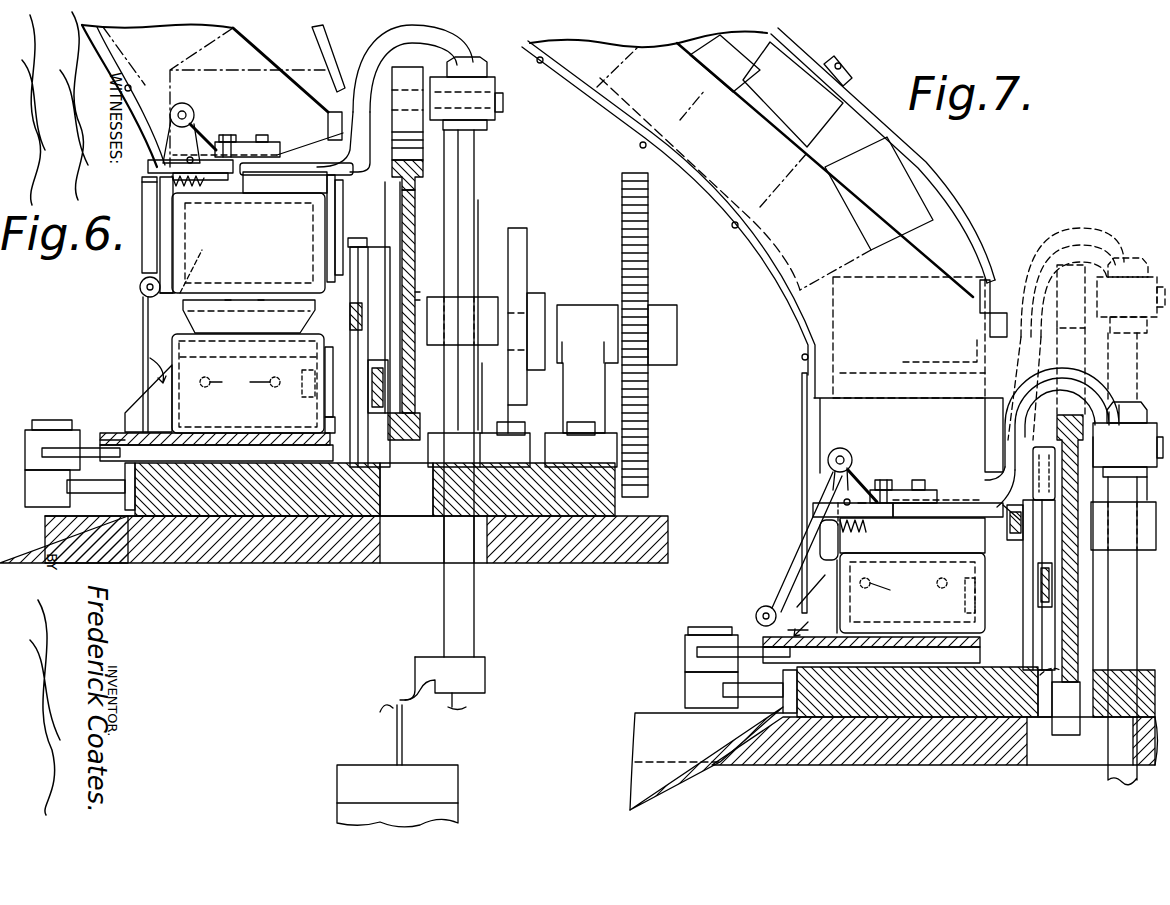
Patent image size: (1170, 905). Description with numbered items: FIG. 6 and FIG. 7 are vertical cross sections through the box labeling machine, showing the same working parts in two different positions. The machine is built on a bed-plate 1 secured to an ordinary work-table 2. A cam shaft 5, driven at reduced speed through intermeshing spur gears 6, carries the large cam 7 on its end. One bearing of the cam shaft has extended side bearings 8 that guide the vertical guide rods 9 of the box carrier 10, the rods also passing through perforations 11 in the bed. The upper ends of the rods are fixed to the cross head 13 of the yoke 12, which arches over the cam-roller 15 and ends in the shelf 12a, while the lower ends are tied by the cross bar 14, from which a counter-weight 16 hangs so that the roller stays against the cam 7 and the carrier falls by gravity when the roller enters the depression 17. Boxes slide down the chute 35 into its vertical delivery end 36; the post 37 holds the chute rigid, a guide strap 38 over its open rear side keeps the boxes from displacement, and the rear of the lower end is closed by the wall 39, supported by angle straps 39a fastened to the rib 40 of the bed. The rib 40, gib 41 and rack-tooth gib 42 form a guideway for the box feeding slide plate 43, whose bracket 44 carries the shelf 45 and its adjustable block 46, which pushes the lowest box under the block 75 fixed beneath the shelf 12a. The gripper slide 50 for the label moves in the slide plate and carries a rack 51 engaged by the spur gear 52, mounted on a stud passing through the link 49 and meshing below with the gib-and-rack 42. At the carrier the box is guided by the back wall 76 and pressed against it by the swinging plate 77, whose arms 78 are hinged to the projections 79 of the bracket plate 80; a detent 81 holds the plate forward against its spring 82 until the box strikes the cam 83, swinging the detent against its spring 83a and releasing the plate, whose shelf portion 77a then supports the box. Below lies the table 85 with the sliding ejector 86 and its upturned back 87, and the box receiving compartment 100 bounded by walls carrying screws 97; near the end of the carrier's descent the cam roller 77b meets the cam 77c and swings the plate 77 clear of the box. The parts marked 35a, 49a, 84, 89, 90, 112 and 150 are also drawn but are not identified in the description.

In FIG. 6, the bed-plate 1 is at (312, 512).
In FIG. 6, the work-table 2 is at (592, 560).
In FIG. 7, the work-table 2 is at (997, 755).
In FIG. 6, the cam shaft 5 is at (560, 305).
In FIG. 6, the spur gears 6 is at (645, 292).
In FIG. 6, the large cam 7 is at (418, 200).
In FIG. 7, the large cam 7 is at (1068, 738).
In FIG. 6, the extended side bearings 8 is at (480, 300).
In FIG. 7, the extended side bearings 8 is at (1150, 486).
In FIG. 6, the guide rods 9 is at (444, 608).
In FIG. 7, the guide rods 9 is at (1123, 614).
In FIG. 6, the box carrier 10 is at (344, 168).
In FIG. 7, the box carrier 10 is at (977, 497).
In FIG. 6, the perforations 11 is at (438, 520).
In FIG. 7, the perforations 11 is at (1105, 722).
In FIG. 6, the yoke portion 12 is at (382, 30).
In FIG. 7, the yoke portion 12 is at (1054, 232).
In FIG. 6, the shelf 12a is at (290, 150).
In FIG. 6, the cross head 13 is at (493, 90).
In FIG. 7, the cross head 13 is at (1128, 285).
In FIG. 6, the cross bar 14 is at (484, 678).
In FIG. 6, the cam-roller 15 is at (398, 120).
In FIG. 7, the cam-roller 15 is at (1062, 306).
In FIG. 6, the counter-weight 16 is at (458, 793).
In FIG. 6, the depression 17 is at (406, 489).
In FIG. 6, the chute 35 is at (300, 47).
In FIG. 7, the chute 35 is at (860, 124).
In FIG. 6, the plate 35a is at (64, 537).
In FIG. 7, the plate 35a is at (706, 758).
In FIG. 7, the delivery end 36 is at (823, 410).
In FIG. 6, the vertical post 37 is at (143, 350).
In FIG. 7, the vertical post 37 is at (802, 467).
In FIG. 6, the guide strap 38 is at (326, 70).
In FIG. 7, the guide strap 38 is at (967, 214).
In FIG. 6, the vertical wall 39 is at (331, 128).
In FIG. 7, the vertical wall 39 is at (990, 330).
In FIG. 7, the angle straps 39a is at (1003, 437).
In FIG. 6, the flange 40 is at (380, 288).
In FIG. 7, the flange 40 is at (1075, 640).
In FIG. 6, the gib 41 is at (356, 246).
In FIG. 7, the gib 41 is at (1039, 585).
In FIG. 6, the rack-tooth gib 42 is at (370, 482).
In FIG. 7, the rack-tooth gib 42 is at (975, 656).
In FIG. 6, the slide plate 43 is at (376, 374).
In FIG. 7, the slide plate 43 is at (1045, 548).
In FIG. 6, the bracket 44 is at (270, 340).
In FIG. 6, the box receiving shelf 45 is at (225, 300).
In FIG. 7, the box receiving shelf 45 is at (863, 502).
In FIG. 6, the block 46 is at (258, 298).
In FIG. 7, the block 46 is at (925, 497).
In FIG. 6, the link 49 is at (383, 407).
In FIG. 7, the link 49 is at (1040, 537).
In FIG. 6, the plate 49a is at (462, 321).
In FIG. 7, the plate 49a is at (1123, 526).
In FIG. 6, the gripper slide 50 is at (415, 295).
In FIG. 7, the gripper slide 50 is at (1002, 506).
In FIG. 6, the rack 51 is at (341, 310).
In FIG. 7, the rack 51 is at (1015, 522).
In FIG. 6, the spur gear 52 is at (328, 422).
In FIG. 6, the block 75 is at (285, 183).
In FIG. 7, the block 75 is at (912, 526).
In FIG. 6, the back wall 76 is at (326, 226).
In FIG. 7, the back wall 76 is at (975, 548).
In FIG. 6, the swinging plate 77 is at (160, 250).
In FIG. 7, the swinging plate 77 is at (812, 548).
In FIG. 6, the shelf portion 77a is at (199, 262).
In FIG. 7, the shelf portion 77a is at (797, 630).
In FIG. 6, the cam roller 77b is at (140, 286).
In FIG. 7, the cam roller 77b is at (757, 612).
In FIG. 6, the cam 77c is at (134, 404).
In FIG. 7, the cam 77c is at (823, 577).
In FIG. 6, the arms 78 is at (172, 118).
In FIG. 7, the arms 78 is at (818, 485).
In FIG. 6, the projections 79 is at (200, 135).
In FIG. 7, the projections 79 is at (858, 480).
In FIG. 6, the bracket plate 80 is at (262, 142).
In FIG. 7, the bracket plate 80 is at (903, 488).
In FIG. 6, the detent 81 is at (207, 172).
In FIG. 7, the detent 81 is at (815, 512).
In FIG. 6, the spring 82 is at (186, 190).
In FIG. 7, the spring 82 is at (858, 538).
In FIG. 6, the cam 83 is at (157, 198).
In FIG. 7, the cam 83 is at (820, 553).
In FIG. 6, the spring 83a is at (191, 156).
In FIG. 7, the spring 83a is at (851, 500).
In FIG. 6, the plate 84 is at (330, 400).
In FIG. 6, the table 85 is at (228, 433).
In FIG. 7, the table 85 is at (737, 633).
In FIG. 6, the ejector 86 is at (216, 458).
In FIG. 7, the ejector 86 is at (871, 659).
In FIG. 7, the back 87 is at (965, 598).
In FIG. 6, the bracket 89 is at (116, 432).
In FIG. 6, the fitting 90 is at (93, 452).
In FIG. 7, the fitting 90 is at (752, 660).
In FIG. 6, the screws 97 is at (240, 382).
In FIG. 7, the screws 97 is at (935, 588).
In FIG. 6, the box receiving compartment 100 is at (157, 360).
In FIG. 7, the box receiving compartment 100 is at (816, 626).
In FIG. 6, the coupling 112 is at (190, 312).
In FIG. 7, the coupling 112 is at (830, 530).
In FIG. 6, the bar 150 is at (520, 229).